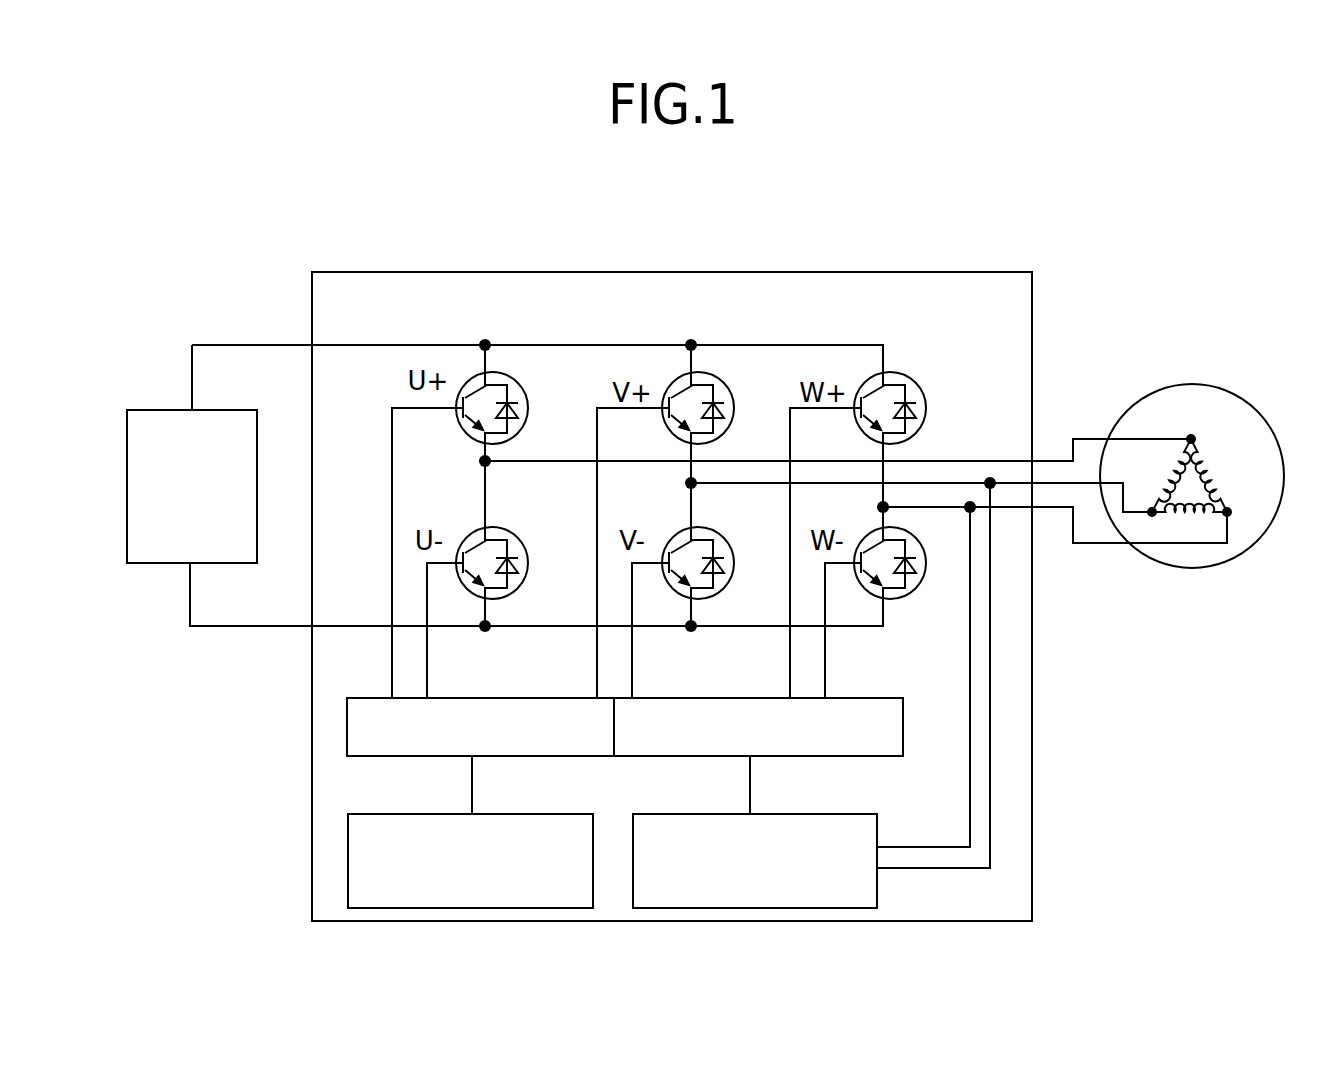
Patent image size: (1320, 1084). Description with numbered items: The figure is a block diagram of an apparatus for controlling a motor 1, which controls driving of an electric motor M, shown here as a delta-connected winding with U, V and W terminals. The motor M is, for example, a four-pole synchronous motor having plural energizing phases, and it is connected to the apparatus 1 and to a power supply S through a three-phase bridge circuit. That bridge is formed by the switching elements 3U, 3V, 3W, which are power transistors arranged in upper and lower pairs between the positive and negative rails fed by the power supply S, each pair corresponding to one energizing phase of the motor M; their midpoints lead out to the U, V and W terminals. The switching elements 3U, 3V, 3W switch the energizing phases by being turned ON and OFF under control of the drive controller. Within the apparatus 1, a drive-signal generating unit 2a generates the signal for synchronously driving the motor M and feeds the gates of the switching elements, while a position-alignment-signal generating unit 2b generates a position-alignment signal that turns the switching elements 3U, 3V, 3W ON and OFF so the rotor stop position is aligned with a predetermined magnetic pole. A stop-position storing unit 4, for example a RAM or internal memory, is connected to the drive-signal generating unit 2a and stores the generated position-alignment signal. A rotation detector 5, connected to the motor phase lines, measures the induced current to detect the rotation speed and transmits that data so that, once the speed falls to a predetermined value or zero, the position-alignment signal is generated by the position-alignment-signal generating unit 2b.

The apparatus for controlling a motor 1 is at (1013, 272).
The drive-signal generating unit 2a is at (372, 697).
The position-alignment-signal generating unit 2b is at (866, 698).
The switching element 3U is at (527, 394).
The switching element 3V is at (734, 397).
The switching element 3W is at (919, 398).
The stop-position storing unit 4 is at (566, 814).
The rotation detector 5 is at (851, 814).
The power supply S is at (127, 410).
The motor M is at (1253, 405).